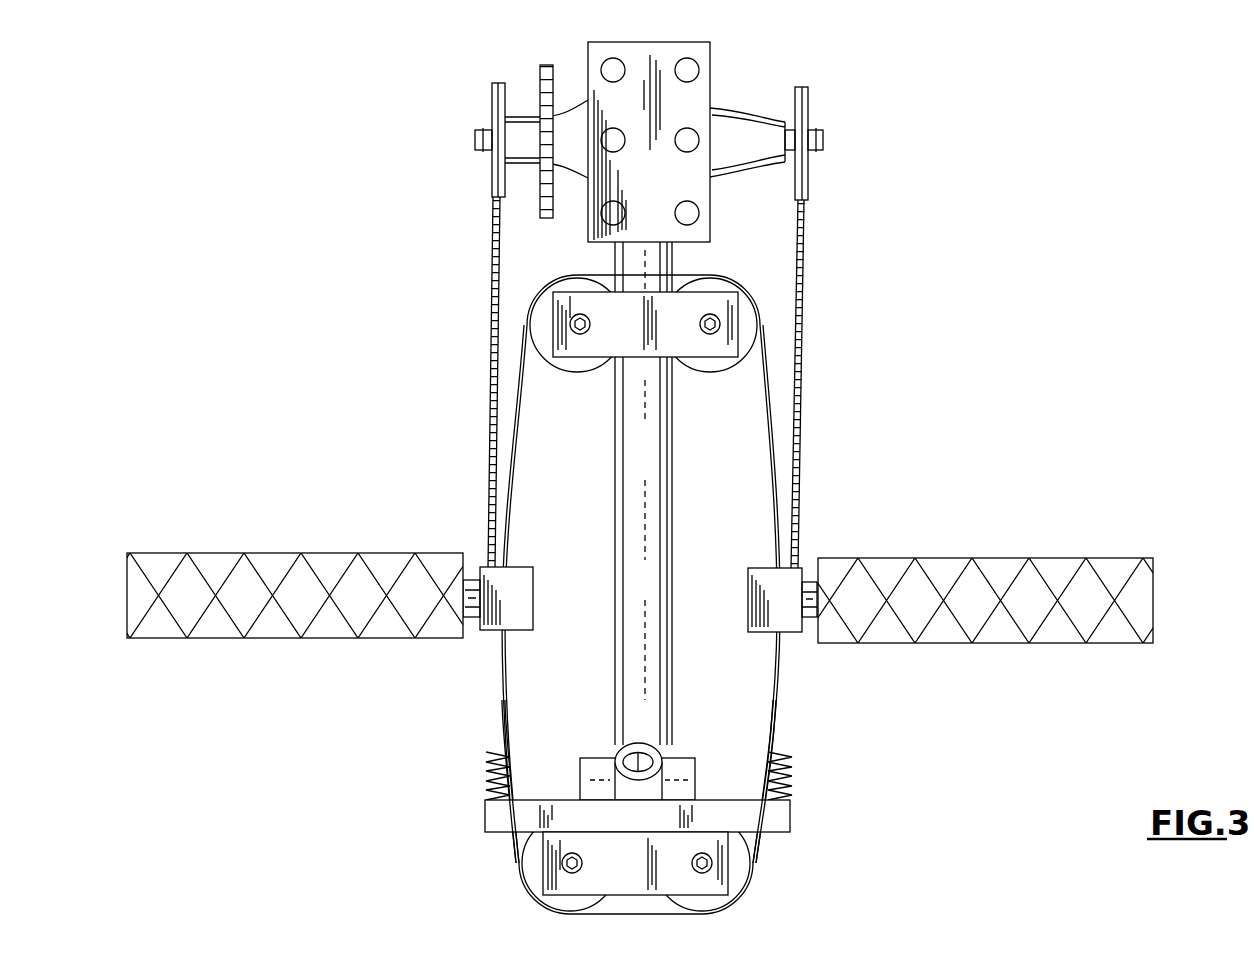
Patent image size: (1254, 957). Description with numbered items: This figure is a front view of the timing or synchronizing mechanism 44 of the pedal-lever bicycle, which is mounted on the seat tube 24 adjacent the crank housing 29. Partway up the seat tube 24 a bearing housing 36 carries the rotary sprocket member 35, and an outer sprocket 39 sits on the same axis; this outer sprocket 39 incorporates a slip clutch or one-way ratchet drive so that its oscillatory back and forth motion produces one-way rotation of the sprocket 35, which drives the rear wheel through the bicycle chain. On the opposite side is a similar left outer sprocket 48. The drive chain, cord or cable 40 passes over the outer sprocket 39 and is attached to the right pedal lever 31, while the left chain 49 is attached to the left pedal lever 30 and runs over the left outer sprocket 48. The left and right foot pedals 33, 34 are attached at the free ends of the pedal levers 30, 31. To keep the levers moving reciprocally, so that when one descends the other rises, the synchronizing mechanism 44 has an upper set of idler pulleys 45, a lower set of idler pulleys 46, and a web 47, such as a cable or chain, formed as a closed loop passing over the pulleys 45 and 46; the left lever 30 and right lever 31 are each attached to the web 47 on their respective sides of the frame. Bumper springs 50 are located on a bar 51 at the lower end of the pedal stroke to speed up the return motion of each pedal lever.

The seat tube 24 is at (673, 493).
The crank housing 29 is at (697, 772).
The left pedal lever 30 is at (787, 633).
The right pedal lever 31 is at (490, 633).
The left foot pedal 33 is at (920, 558).
The right foot pedal 34 is at (292, 640).
The rotary sprocket member 35 is at (540, 72).
The bearing housing 36 is at (712, 76).
The outer sprocket 39 is at (491, 108).
The drive chain 40 is at (490, 392).
The synchronizing mechanism 44 is at (483, 724).
The upper set of idler pulleys 45 is at (647, 308).
The lower set of idler pulleys 46 is at (717, 885).
The web 47 is at (770, 716).
The left outer sprocket 48 is at (809, 108).
The left chain 49 is at (800, 425).
The bumper springs 50 is at (487, 772).
The bar 51 is at (780, 833).